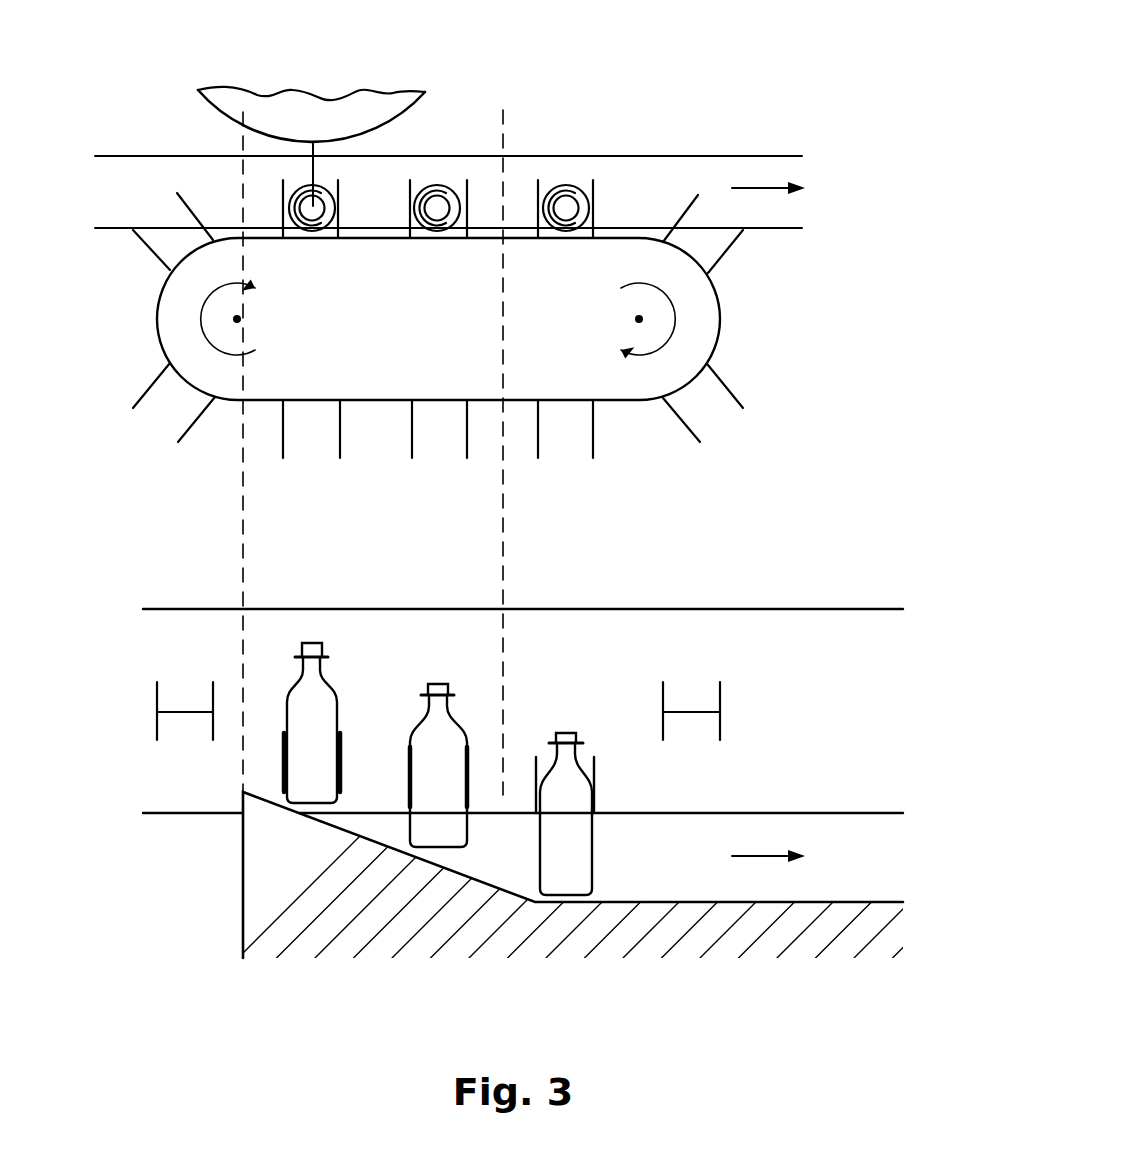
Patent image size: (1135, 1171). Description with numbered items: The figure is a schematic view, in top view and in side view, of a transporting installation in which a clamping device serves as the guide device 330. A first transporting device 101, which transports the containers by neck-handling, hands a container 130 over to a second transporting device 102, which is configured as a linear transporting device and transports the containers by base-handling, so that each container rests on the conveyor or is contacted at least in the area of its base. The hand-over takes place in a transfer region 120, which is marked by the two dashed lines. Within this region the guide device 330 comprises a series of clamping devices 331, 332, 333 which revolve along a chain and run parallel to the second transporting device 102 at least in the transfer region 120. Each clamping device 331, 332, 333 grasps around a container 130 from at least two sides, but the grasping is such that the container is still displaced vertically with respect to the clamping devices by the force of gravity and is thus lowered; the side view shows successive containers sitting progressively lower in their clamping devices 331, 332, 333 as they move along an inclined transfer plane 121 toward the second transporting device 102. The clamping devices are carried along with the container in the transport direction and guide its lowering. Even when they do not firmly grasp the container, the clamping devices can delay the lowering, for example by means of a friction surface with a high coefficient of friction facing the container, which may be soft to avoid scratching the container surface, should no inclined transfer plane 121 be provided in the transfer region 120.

The first transporting device 101 is at (388, 97).
The second transporting device 102 is at (748, 165).
The transfer region 120 is at (503, 120).
The inclined transfer plane 121 is at (442, 877).
The container 130 is at (437, 233).
The guide device 330 is at (722, 322).
The clamping device 331 is at (340, 212).
The clamping device 332 is at (467, 215).
The clamping device 333 is at (593, 192).